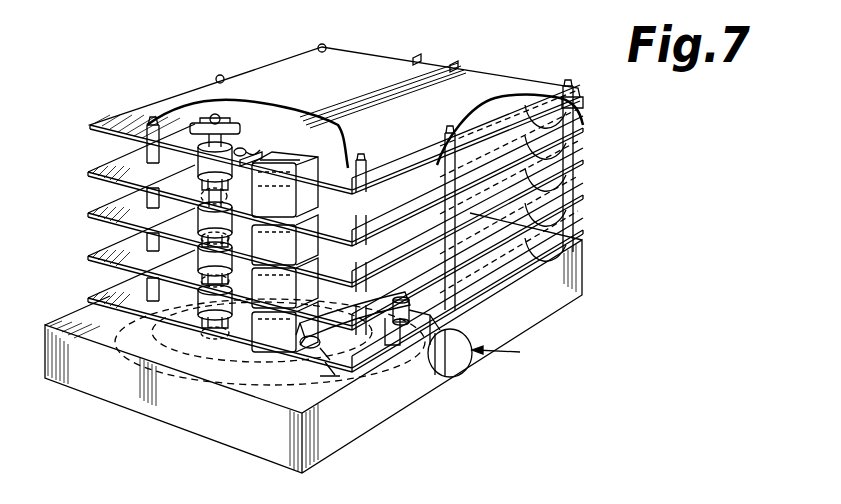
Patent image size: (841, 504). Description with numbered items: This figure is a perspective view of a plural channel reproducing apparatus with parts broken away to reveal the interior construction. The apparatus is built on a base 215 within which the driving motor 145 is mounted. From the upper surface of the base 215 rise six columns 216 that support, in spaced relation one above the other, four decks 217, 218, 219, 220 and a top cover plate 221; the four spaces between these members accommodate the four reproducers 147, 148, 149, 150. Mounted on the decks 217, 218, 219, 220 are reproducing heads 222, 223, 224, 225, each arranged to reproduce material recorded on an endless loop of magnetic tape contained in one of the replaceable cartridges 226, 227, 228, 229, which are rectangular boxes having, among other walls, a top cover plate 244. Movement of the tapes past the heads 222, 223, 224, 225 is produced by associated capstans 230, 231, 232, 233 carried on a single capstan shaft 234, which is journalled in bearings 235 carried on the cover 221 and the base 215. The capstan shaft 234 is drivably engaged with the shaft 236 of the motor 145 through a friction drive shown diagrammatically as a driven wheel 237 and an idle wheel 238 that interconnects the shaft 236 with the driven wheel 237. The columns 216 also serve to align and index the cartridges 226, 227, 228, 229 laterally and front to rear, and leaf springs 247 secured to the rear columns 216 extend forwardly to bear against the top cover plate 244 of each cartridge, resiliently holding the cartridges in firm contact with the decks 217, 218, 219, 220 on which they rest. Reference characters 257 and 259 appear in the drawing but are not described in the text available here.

The driving motor 145 is at (456, 373).
The reproducer 147 is at (104, 143).
The reproducer 148 is at (95, 190).
The reproducer 149 is at (95, 236).
The reproducer 150 is at (95, 282).
The base 215 is at (580, 264).
The column 216 is at (582, 108).
The deck 217 is at (89, 299).
The deck 218 is at (90, 257).
The deck 219 is at (90, 214).
The deck 220 is at (92, 171).
The top cover plate 221 is at (88, 125).
The reproducing head 222 is at (297, 338).
The reproducing head 223 is at (297, 294).
The reproducing head 224 is at (297, 246).
The reproducing head 225 is at (297, 206).
The replaceable cartridge 226 is at (393, 345).
The replaceable cartridge 227 is at (454, 272).
The replaceable cartridge 228 is at (440, 228).
The replaceable cartridge 229 is at (394, 186).
The capstan 230 is at (198, 300).
The capstan 231 is at (198, 258).
The capstan 232 is at (198, 213).
The capstan 233 is at (200, 172).
The capstan shaft 234 is at (232, 128).
The bearing 235 is at (218, 130).
The motor shaft 236 is at (414, 326).
The driven wheel 237 is at (271, 383).
The idle wheel 238 is at (377, 350).
The top cover plate of cartridge 244 is at (220, 196).
The leaf spring 247 is at (572, 132).
The switch bracket 257 is at (264, 155).
The switch 259 is at (246, 150).